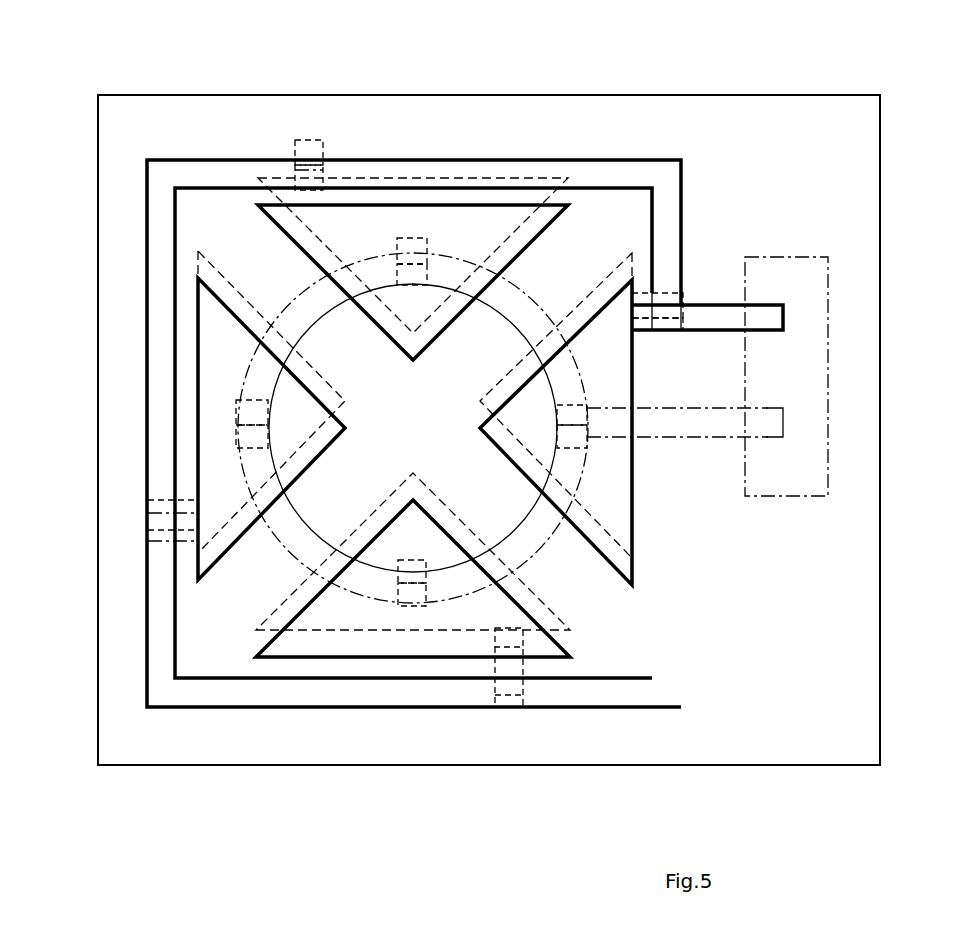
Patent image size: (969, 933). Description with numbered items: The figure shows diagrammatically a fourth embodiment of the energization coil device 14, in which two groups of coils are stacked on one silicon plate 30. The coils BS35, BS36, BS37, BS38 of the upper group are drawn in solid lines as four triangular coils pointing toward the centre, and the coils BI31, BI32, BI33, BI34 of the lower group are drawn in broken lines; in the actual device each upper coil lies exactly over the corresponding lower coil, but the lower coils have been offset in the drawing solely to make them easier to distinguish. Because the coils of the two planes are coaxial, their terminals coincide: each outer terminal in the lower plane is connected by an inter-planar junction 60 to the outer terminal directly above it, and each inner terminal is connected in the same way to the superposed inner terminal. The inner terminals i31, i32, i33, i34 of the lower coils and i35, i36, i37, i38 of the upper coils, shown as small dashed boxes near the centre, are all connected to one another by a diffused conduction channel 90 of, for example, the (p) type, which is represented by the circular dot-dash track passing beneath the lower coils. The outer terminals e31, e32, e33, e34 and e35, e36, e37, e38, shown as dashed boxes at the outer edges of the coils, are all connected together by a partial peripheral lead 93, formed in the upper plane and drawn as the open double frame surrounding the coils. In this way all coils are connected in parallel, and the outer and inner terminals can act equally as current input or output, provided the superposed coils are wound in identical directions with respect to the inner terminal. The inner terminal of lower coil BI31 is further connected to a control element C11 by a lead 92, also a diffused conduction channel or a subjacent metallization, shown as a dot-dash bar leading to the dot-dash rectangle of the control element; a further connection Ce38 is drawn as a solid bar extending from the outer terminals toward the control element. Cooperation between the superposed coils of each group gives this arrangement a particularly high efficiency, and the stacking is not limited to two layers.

The energization coil device 14 is at (463, 430).
The silicon plate 30 is at (98, 272).
The inter-planar junction 60 is at (323, 195).
The diffused conduction channel 90 is at (290, 548).
The lead 92 is at (697, 430).
The partial peripheral lead 93 is at (212, 692).
The lower layer coil BI31 is at (623, 530).
The lower layer coil BI32 is at (495, 200).
The lower layer coil BI33 is at (212, 258).
The lower layer coil BI34 is at (312, 622).
The upper layer coil BS35 is at (617, 568).
The upper layer coil BS36 is at (547, 212).
The upper layer coil BS37 is at (212, 560).
The upper layer coil BS38 is at (405, 650).
The control element C11 is at (820, 497).
The electrode connection Ce38 is at (710, 303).
The outer terminal e31 is at (663, 288).
The outer terminal e32 is at (298, 127).
The outer terminal e33 is at (160, 494).
The outer terminal e34 is at (521, 632).
The outer terminal e35 is at (660, 336).
The outer terminal e36 is at (323, 194).
The outer terminal e37 is at (143, 527).
The outer terminal e38 is at (509, 717).
The inner terminal i31 is at (622, 378).
The inner terminal i32 is at (456, 236).
The inner terminal i33 is at (252, 397).
The inner terminal i34 is at (432, 542).
The inner terminal i35 is at (575, 451).
The inner terminal i36 is at (399, 289).
The inner terminal i37 is at (272, 438).
The inner terminal i38 is at (493, 608).